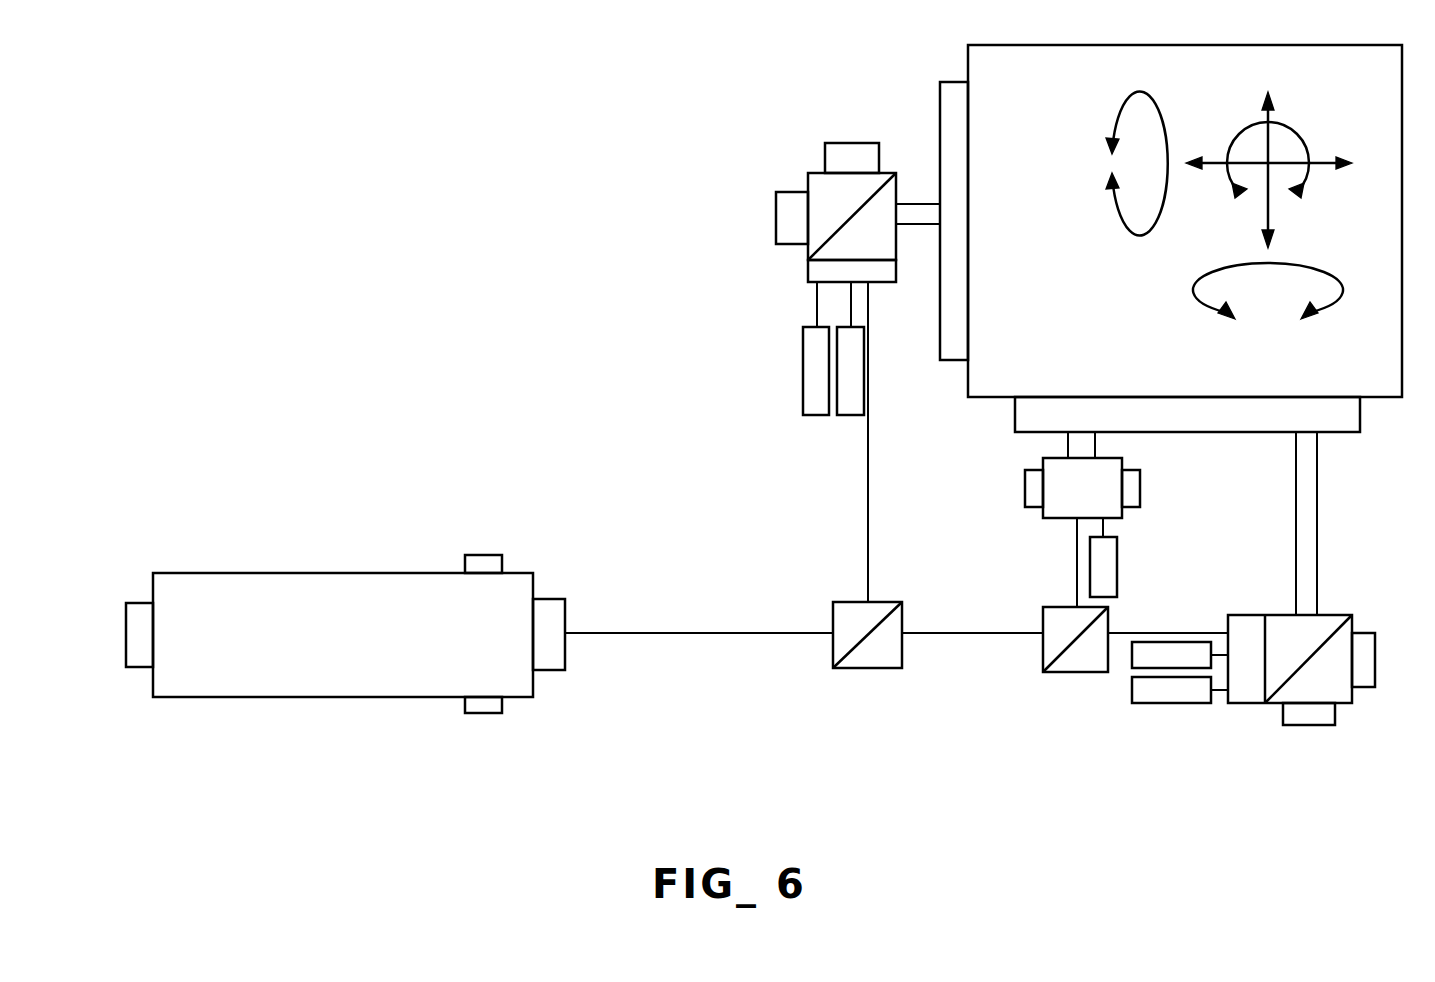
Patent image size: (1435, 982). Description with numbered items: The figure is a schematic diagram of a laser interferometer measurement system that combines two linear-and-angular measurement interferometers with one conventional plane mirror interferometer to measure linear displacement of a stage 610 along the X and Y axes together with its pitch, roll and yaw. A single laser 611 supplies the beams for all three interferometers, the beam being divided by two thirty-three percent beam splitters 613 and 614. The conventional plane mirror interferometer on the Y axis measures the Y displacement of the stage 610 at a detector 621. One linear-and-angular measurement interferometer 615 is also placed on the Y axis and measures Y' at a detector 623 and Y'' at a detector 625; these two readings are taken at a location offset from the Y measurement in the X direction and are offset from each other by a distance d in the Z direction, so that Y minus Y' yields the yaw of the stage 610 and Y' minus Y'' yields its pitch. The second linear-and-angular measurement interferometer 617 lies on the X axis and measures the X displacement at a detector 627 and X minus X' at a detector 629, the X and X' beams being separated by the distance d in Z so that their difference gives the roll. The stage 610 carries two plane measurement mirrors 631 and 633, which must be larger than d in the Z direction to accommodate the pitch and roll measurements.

The stage 610 is at (1044, 78).
The laser 611 is at (297, 573).
The beam splitter 613 is at (1058, 520).
The beam splitter 614 is at (1043, 615).
The linear-and-angular measurement interferometer 615 is at (1352, 615).
The linear-and-angular measurement interferometer 617 is at (897, 173).
The detector 621 is at (1119, 566).
The detector 623 is at (1131, 656).
The detector 625 is at (1168, 708).
The detector 627 is at (805, 420).
The detector 629 is at (843, 422).
The plane measurement mirror 631 is at (1033, 432).
The plane measurement mirror 633 is at (942, 333).